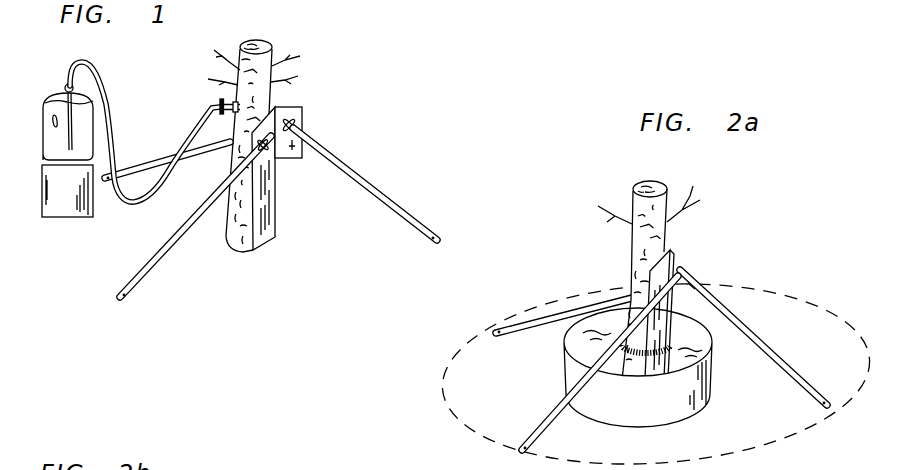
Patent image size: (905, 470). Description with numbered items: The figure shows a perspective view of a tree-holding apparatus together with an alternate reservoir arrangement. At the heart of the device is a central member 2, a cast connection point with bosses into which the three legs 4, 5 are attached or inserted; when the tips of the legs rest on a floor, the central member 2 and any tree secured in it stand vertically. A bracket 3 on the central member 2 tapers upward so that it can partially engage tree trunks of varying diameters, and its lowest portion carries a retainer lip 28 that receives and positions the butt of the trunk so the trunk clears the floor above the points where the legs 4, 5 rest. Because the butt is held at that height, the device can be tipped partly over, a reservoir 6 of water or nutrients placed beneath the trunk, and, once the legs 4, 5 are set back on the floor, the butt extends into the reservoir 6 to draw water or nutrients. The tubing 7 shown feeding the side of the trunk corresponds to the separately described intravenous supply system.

In FIG. 1, the central member 2 is at (290, 103).
In FIG. 1, the bracket 3 is at (281, 206).
In FIG. 1, the leg 4 is at (385, 212).
In FIG. 1, the leg 5 is at (197, 165).
In FIG. 2a, the reservoir 6 is at (685, 426).
In FIG. 1, the feeding tube 7 is at (119, 120).
In FIG. 1, the retainer lip 28 is at (236, 256).